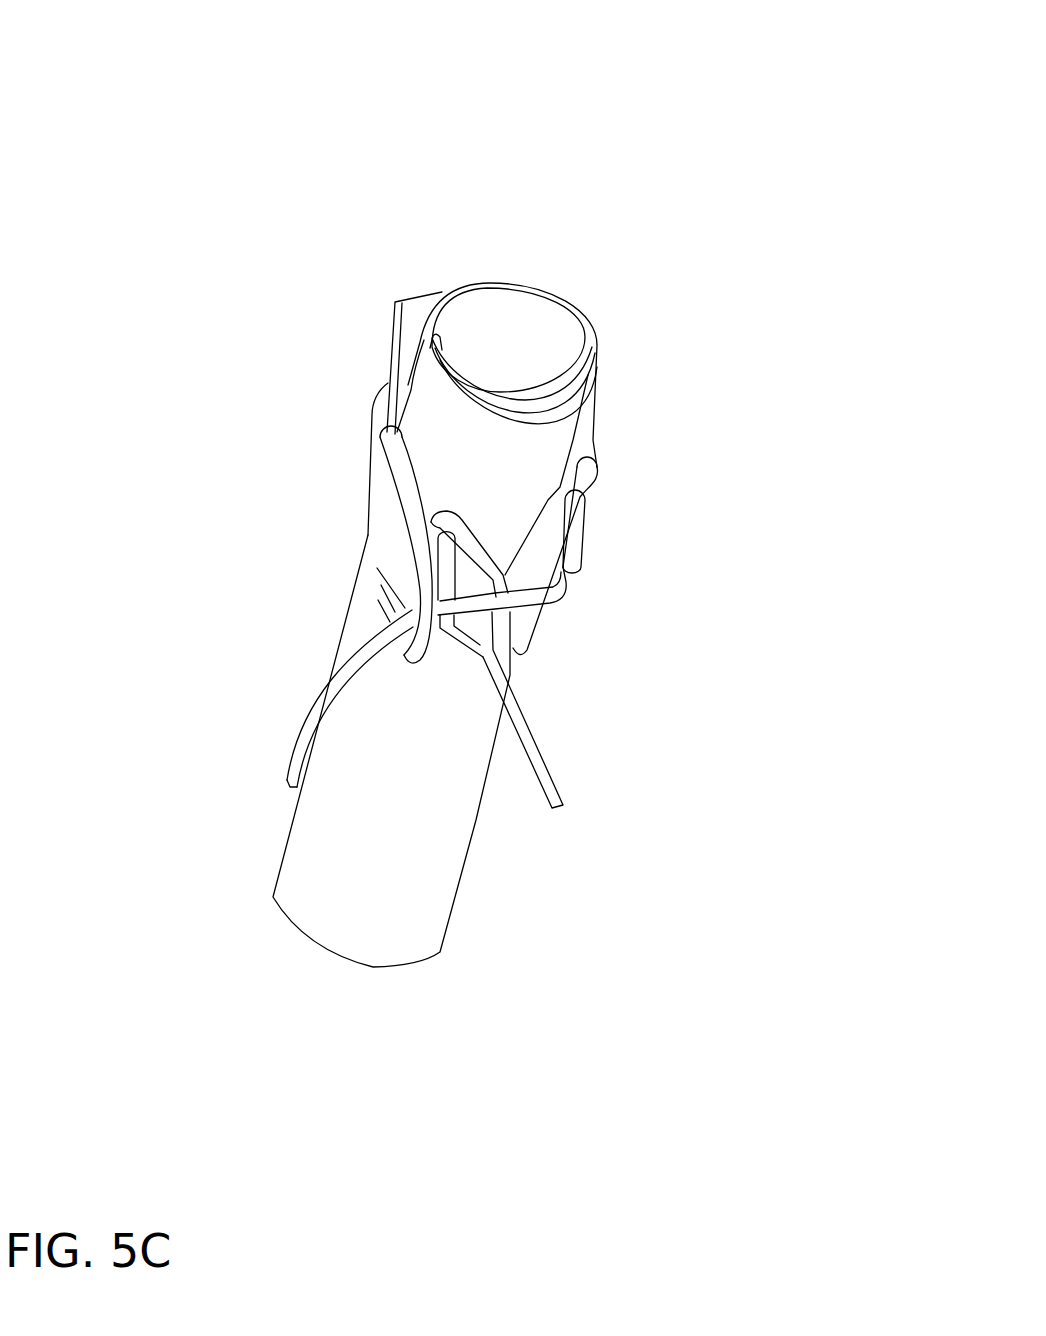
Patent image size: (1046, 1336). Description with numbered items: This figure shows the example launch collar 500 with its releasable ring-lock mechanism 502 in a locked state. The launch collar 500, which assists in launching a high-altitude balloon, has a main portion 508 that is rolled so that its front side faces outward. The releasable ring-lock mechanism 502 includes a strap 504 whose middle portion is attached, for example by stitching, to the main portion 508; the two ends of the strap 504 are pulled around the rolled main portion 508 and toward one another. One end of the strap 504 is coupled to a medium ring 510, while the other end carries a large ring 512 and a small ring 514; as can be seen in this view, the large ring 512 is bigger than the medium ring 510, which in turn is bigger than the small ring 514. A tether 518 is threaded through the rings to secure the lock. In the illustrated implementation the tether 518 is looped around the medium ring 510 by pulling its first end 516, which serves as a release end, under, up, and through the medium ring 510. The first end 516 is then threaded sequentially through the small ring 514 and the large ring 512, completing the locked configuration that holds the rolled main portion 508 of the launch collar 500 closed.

The launch collar 500 is at (786, 61).
The releasable ring-lock mechanism 502 is at (598, 623).
The strap 504 is at (378, 523).
The main portion 508 is at (391, 751).
The medium ring 510 is at (598, 468).
The large ring 512 is at (412, 472).
The small ring 514 is at (478, 543).
The first end 516 is at (287, 767).
The tether 518 is at (525, 718).